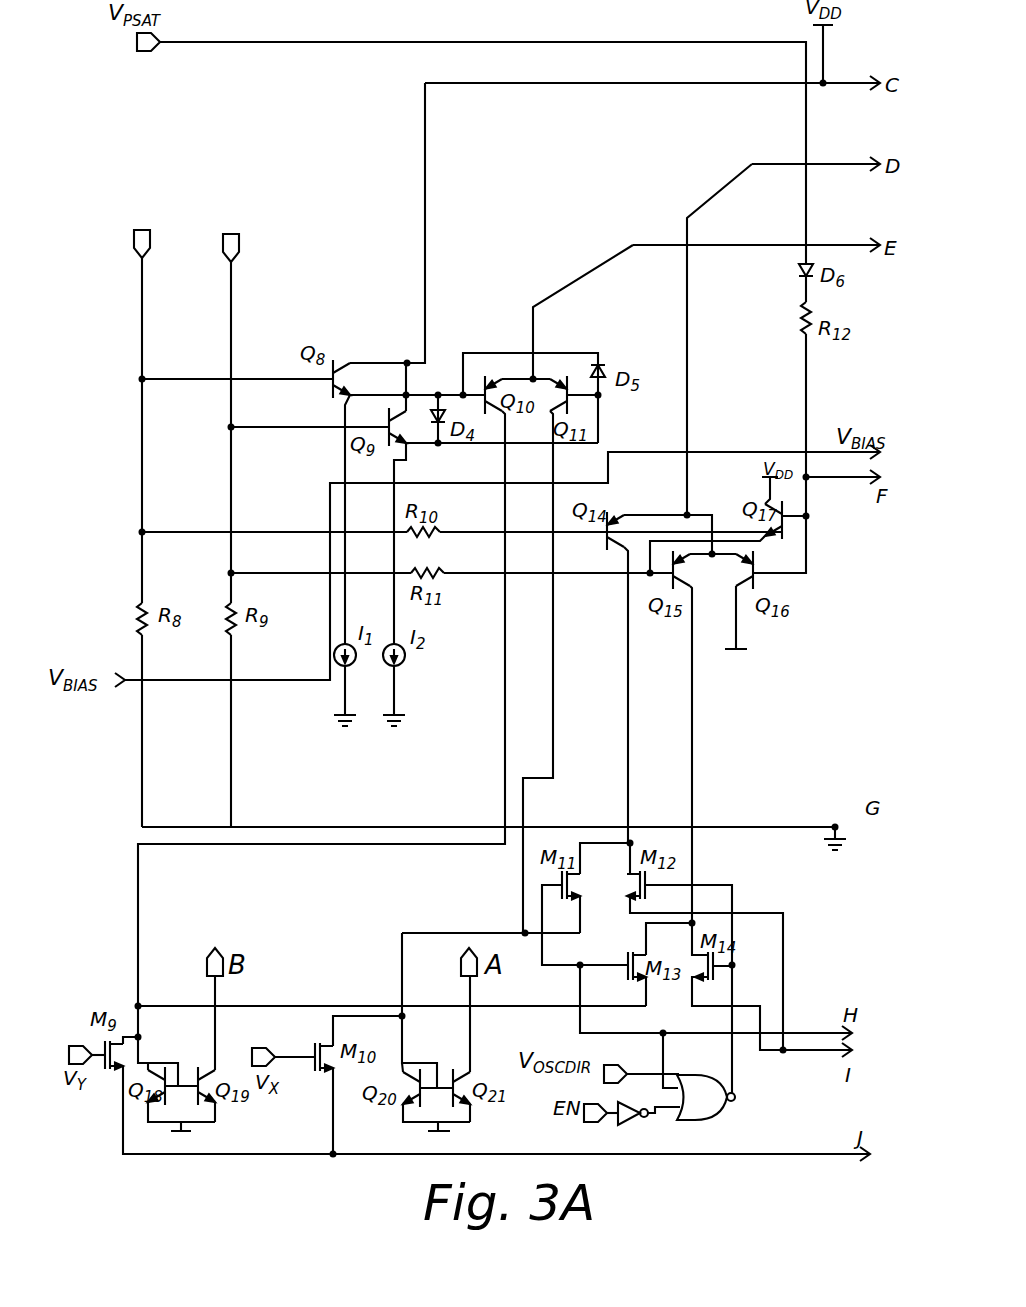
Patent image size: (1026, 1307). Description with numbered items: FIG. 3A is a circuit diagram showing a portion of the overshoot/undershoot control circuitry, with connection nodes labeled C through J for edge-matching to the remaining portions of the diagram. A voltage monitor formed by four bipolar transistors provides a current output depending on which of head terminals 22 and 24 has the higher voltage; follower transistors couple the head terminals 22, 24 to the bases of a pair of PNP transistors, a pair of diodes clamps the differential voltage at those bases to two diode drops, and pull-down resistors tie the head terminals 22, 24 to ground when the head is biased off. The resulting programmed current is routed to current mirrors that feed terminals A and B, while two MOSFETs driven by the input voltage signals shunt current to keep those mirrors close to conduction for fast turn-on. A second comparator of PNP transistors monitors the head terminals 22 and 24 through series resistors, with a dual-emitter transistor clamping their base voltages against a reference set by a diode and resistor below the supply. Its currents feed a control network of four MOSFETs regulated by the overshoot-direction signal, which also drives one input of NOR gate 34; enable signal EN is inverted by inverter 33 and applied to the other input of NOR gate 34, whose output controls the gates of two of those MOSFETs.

The head terminal 22 is at (134, 243).
The head terminal 24 is at (239, 246).
The inverter 33 is at (636, 1125).
The NOR gate 34 is at (726, 1112).